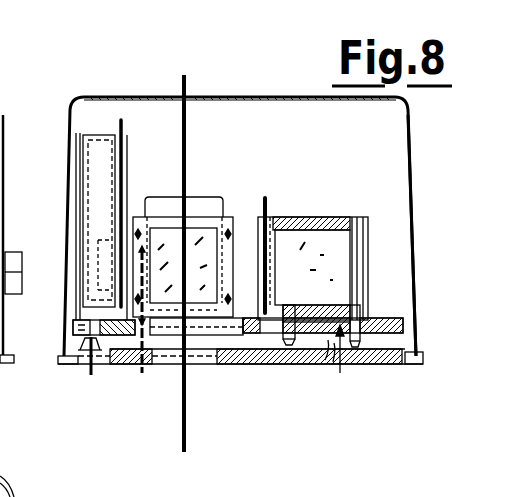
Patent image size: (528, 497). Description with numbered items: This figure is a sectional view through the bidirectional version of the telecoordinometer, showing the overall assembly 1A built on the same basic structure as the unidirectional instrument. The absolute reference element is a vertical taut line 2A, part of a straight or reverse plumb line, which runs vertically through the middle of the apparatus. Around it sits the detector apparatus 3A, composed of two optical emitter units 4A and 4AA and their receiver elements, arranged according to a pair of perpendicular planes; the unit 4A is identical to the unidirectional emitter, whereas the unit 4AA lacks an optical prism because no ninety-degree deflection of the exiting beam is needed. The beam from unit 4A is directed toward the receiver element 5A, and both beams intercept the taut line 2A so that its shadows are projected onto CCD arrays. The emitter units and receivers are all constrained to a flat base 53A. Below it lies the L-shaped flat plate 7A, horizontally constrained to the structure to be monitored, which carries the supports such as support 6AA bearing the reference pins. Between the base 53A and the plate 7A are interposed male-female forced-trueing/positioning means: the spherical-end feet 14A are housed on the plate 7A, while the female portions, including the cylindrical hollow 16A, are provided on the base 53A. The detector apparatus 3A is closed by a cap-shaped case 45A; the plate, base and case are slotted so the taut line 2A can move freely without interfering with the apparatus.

The housing 1A is at (84, 85).
The vertical taut line 2A is at (187, 83).
The detector apparatus 3A is at (263, 131).
The optical emitter unit 4A is at (316, 217).
The optical emitter unit 4AA is at (230, 218).
The receiver element 5A is at (68, 232).
The support 6AA is at (142, 346).
The flat plate 7A is at (268, 352).
The spherical-end feet 14A is at (92, 334).
The cylindrical hollow 16A is at (103, 328).
The cap-shaped case 45A is at (412, 135).
The flat base 53A is at (383, 318).